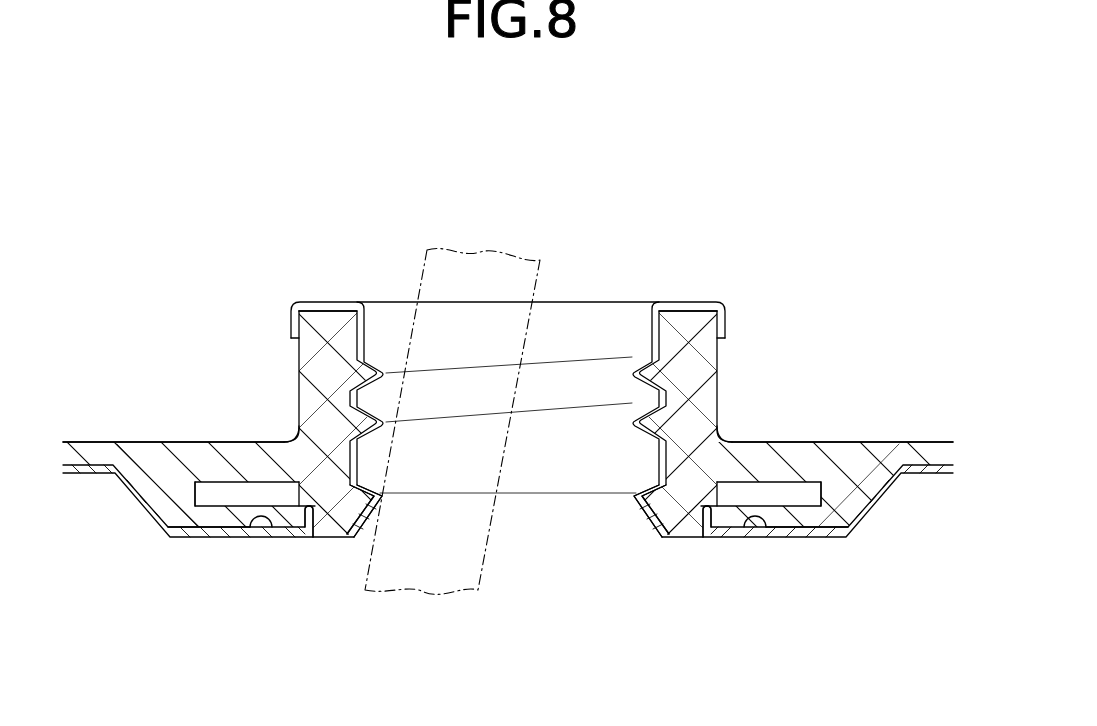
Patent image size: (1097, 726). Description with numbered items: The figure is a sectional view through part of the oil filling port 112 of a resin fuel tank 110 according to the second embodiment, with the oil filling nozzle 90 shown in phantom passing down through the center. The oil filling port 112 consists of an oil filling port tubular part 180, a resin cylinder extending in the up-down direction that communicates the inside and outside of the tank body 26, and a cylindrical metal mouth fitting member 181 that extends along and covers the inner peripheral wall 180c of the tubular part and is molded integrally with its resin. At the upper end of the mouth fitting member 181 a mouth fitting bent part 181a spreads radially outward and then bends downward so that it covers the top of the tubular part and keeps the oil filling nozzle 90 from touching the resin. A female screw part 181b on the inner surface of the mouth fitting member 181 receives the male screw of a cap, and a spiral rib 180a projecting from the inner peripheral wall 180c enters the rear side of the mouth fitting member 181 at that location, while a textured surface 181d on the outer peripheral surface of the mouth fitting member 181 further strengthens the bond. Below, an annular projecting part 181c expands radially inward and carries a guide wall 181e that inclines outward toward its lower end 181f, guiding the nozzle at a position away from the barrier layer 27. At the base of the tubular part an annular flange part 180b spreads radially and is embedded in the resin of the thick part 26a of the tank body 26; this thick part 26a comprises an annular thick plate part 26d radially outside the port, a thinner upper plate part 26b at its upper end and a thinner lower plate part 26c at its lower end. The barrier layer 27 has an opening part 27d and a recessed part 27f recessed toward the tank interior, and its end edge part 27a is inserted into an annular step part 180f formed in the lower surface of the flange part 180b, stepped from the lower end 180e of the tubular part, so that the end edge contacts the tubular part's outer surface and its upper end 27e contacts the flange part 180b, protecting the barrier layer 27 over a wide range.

The fuel tank 110 is at (140, 188).
The oil filling port 112 is at (223, 207).
The oil filling nozzle 90 is at (486, 250).
The tank body 26 is at (918, 434).
The thick part 26a is at (168, 433).
The upper plate part 26b is at (256, 456).
The lower plate part 26c is at (197, 540).
The thick plate part 26d is at (167, 486).
The barrier layer 27 is at (868, 538).
The end edge part 27a is at (320, 538).
The opening part 27d is at (307, 538).
The upper end 27e is at (287, 538).
The recessed part 27f is at (247, 534).
The oil filling port tubular part 180 is at (292, 356).
The rib 180a is at (372, 324).
The flange part 180b is at (237, 486).
The inner peripheral wall 180c is at (295, 426).
The lower end 180e is at (334, 540).
The step part 180f is at (228, 538).
The mouth fitting member 181 is at (309, 300).
The mouth fitting bent part 181a is at (338, 301).
The female screw part 181b is at (387, 372).
The projecting part 181c is at (396, 540).
The textured surface 181d is at (291, 310).
The guide wall 181e is at (372, 536).
The lower end 181f is at (358, 530).